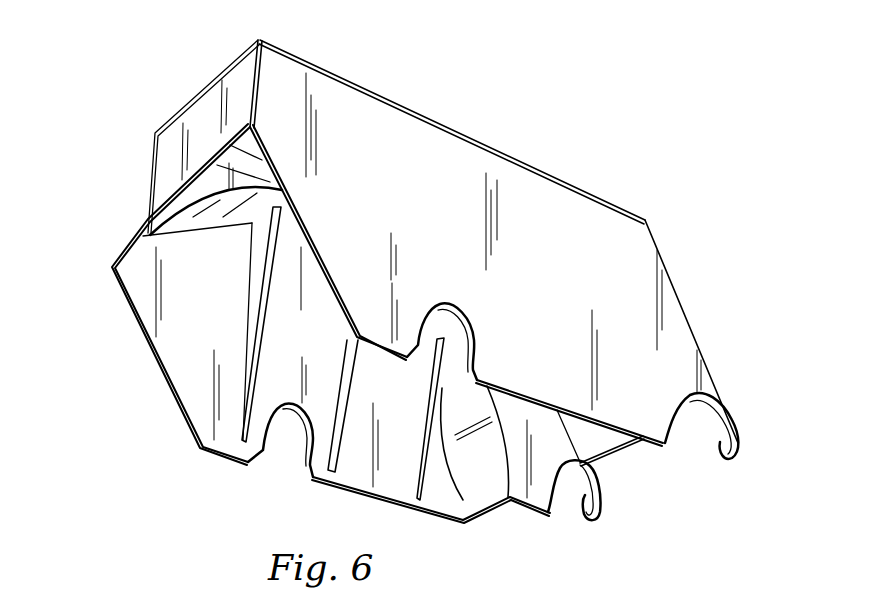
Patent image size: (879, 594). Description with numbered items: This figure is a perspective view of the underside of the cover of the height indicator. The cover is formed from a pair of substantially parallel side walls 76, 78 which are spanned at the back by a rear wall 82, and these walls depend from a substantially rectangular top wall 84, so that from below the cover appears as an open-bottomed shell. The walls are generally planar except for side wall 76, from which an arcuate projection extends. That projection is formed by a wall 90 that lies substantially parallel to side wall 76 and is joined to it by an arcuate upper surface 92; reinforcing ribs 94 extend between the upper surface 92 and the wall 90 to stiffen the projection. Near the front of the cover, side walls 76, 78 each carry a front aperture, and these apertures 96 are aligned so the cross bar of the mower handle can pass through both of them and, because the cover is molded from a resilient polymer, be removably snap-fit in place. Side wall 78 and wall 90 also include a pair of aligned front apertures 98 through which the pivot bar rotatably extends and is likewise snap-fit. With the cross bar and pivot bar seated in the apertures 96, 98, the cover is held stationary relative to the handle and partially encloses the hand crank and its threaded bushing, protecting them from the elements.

The side wall 76 is at (527, 505).
The side wall 78 is at (673, 318).
The rear wall 82 is at (207, 102).
The top wall 84 is at (445, 123).
The wall 90 is at (185, 362).
The arcuate upper surface 92 is at (217, 217).
The reinforcing ribs 94 is at (340, 353).
The apertures 96 is at (588, 500).
The front apertures 98 is at (300, 437).